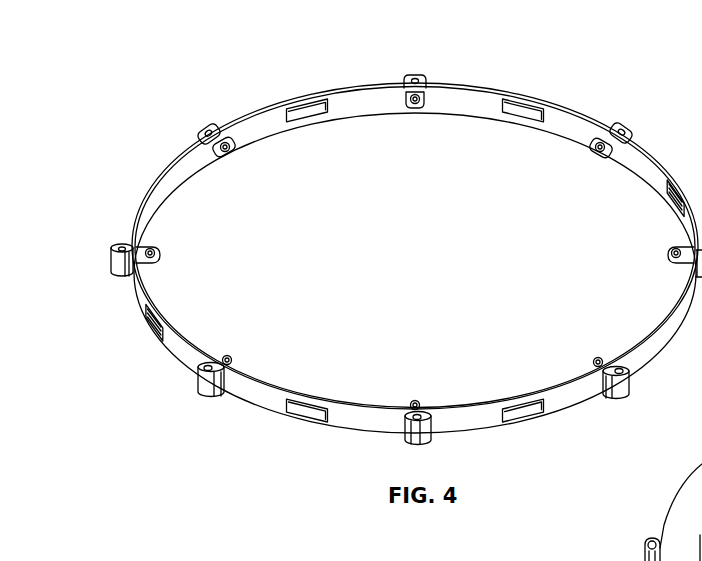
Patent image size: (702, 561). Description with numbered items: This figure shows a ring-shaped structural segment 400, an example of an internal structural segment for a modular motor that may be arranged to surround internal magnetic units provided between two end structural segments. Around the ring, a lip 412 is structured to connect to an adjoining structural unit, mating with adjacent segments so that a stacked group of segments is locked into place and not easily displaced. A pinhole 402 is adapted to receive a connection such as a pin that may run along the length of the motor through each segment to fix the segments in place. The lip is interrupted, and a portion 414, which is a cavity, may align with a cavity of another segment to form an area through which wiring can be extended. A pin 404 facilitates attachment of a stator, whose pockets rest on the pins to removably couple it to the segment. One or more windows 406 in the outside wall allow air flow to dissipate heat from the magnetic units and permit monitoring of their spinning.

The structural segment 400 is at (206, 64).
The pinhole 402 is at (417, 72).
The pin 404 is at (600, 134).
The window 406 is at (521, 106).
The lip 412 is at (240, 382).
The portion 414 is at (160, 213).